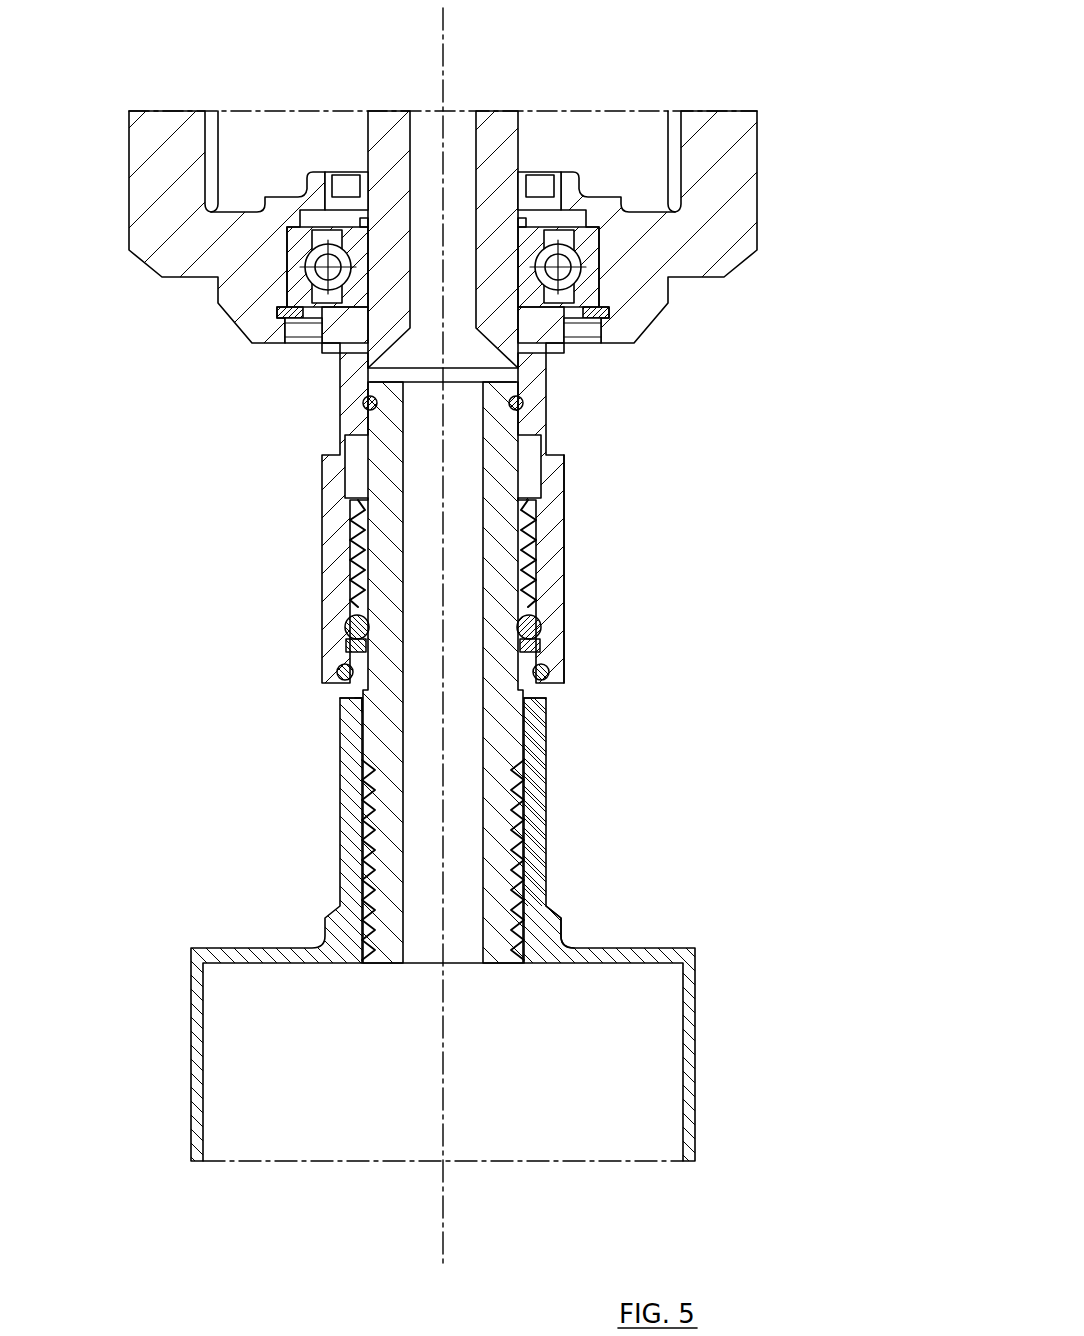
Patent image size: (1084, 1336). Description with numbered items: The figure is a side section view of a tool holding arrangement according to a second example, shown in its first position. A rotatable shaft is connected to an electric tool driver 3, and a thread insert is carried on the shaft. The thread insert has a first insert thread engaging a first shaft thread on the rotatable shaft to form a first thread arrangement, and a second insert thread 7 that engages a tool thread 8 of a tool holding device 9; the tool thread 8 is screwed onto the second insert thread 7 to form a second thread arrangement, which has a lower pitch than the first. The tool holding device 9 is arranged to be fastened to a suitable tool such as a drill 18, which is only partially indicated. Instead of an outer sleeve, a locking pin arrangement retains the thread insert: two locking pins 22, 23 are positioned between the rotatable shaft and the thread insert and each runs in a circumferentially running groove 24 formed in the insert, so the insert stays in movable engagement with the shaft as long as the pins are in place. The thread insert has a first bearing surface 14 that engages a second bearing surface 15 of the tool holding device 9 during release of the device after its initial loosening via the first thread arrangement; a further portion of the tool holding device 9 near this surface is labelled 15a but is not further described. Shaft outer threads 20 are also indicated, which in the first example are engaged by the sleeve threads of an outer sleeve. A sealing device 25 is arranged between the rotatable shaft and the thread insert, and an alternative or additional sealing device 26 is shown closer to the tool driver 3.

The electric tool driver 3 is at (712, 168).
The sealing device 26 is at (366, 406).
The shaft outer threads 20 is at (565, 552).
The locking pin 22 is at (348, 622).
The locking pin 23 is at (541, 626).
The circumferentially running groove 24 is at (356, 642).
The sealing device 25 is at (537, 644).
The second bearing surface 15 is at (346, 690).
The nut end face 15a is at (355, 702).
The first bearing surface 14 is at (547, 697).
The second insert thread 7 is at (522, 833).
The tool thread 8 is at (519, 883).
The tool holding device 9 is at (533, 877).
The drill 18 is at (618, 1030).